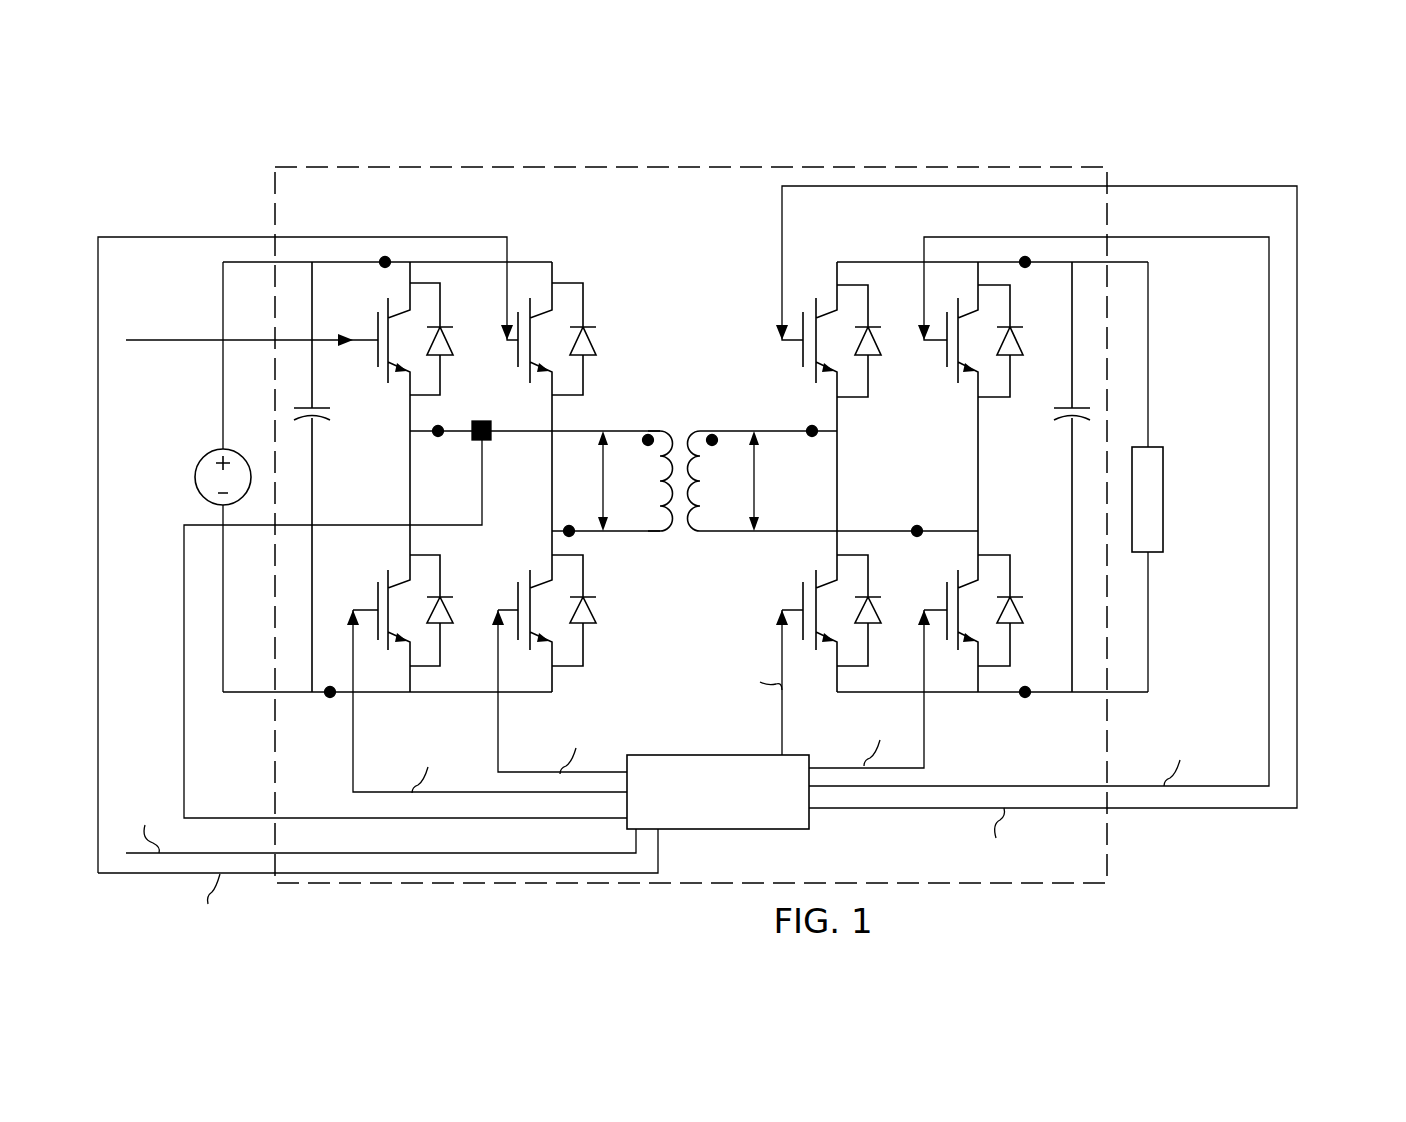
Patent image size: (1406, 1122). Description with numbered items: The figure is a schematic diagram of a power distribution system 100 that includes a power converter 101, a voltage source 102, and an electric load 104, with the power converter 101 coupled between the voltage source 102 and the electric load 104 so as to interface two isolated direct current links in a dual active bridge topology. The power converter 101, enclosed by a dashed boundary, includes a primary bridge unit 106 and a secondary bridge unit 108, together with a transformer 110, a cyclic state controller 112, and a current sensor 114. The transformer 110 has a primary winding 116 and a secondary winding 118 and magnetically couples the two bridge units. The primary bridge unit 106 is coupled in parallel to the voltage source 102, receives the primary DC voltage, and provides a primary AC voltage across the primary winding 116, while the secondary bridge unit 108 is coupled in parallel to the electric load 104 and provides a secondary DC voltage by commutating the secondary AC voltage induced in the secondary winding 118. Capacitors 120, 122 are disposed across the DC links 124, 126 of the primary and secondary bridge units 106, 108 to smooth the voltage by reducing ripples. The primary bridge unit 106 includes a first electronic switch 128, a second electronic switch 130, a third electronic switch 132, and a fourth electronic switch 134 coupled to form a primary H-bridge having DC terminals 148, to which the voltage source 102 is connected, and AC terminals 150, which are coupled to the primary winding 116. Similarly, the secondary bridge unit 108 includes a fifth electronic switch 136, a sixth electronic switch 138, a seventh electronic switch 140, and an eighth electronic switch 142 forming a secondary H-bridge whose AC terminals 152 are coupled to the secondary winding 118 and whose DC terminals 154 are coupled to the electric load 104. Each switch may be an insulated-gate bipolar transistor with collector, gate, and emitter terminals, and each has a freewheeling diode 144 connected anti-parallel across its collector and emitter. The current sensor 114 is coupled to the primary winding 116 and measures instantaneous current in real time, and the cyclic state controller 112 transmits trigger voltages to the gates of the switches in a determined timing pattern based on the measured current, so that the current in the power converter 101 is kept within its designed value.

The power distribution system 100 is at (1292, 116).
The power converter 101 is at (862, 166).
The voltage source 102 is at (203, 456).
The electric load 104 is at (1157, 450).
The primary bridge unit 106 is at (364, 572).
The secondary bridge unit 108 is at (997, 530).
The transformer 110 is at (690, 475).
The cyclic state controller 112 is at (675, 755).
The current sensor 114 is at (474, 438).
The primary winding 116 is at (656, 522).
The secondary winding 118 is at (705, 522).
The capacitor 120 is at (330, 418).
The capacitor 122 is at (1062, 418).
The DC link 124 is at (330, 262).
The DC link 126 is at (858, 261).
The first electronic switch 128 is at (375, 326).
The second electronic switch 130 is at (375, 596).
The third electronic switch 132 is at (517, 348).
The fourth electronic switch 134 is at (510, 578).
The fifth electronic switch 136 is at (800, 354).
The sixth electronic switch 138 is at (800, 588).
The seventh electronic switch 140 is at (944, 368).
The eighth electronic switch 142 is at (947, 596).
The freewheeling diode 144 is at (444, 328).
The DC terminals 148 is at (386, 259).
The AC terminals 150 is at (430, 440).
The AC terminals 152 is at (812, 437).
The DC terminals 154 is at (1025, 261).